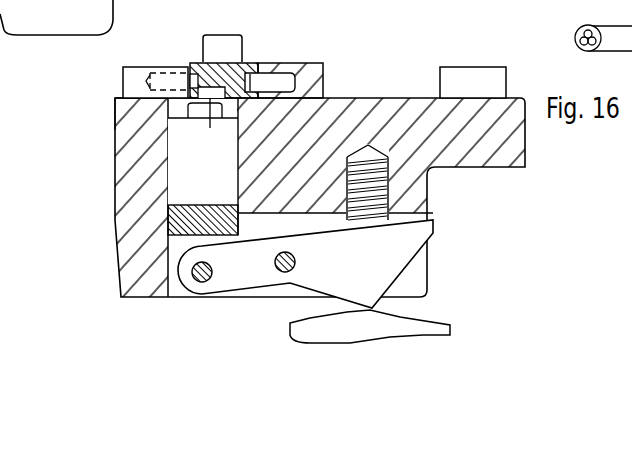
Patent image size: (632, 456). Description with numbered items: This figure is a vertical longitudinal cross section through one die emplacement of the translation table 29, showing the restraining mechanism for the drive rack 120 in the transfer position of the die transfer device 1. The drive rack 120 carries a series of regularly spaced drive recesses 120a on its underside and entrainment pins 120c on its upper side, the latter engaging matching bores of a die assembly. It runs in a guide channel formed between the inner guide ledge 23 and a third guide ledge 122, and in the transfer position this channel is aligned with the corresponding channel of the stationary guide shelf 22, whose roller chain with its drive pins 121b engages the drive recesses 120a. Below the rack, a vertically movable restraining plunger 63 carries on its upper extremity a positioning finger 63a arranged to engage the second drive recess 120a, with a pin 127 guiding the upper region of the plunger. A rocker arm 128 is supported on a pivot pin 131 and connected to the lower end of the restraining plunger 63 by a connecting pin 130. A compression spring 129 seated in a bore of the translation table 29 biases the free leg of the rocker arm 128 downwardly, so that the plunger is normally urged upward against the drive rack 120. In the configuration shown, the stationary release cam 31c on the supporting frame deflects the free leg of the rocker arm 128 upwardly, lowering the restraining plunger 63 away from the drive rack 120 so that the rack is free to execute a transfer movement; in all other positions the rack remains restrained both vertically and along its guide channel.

The apparatus 1 is at (56, 44).
The guide shelf 22 is at (472, 49).
The guide ledge 23 is at (135, 83).
The translation table 29 is at (140, 195).
The release cam 31c is at (390, 325).
The restraining plunger 63 is at (167, 152).
The positioning finger 63a is at (120, 113).
The drive rack 120 is at (203, 47).
The drive recess 120a is at (203, 161).
The entrainment pin 120c is at (229, 52).
The cable 121b is at (625, 38).
The third guide ledge 122 is at (323, 81).
The pin 127 is at (287, 63).
The rocker arm 128 is at (387, 258).
The compression spring 129 is at (385, 189).
The connecting pin 130 is at (194, 283).
The pivot pin 131 is at (279, 274).